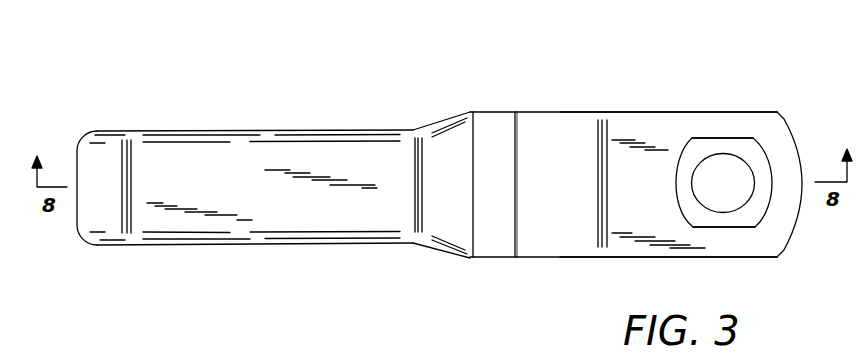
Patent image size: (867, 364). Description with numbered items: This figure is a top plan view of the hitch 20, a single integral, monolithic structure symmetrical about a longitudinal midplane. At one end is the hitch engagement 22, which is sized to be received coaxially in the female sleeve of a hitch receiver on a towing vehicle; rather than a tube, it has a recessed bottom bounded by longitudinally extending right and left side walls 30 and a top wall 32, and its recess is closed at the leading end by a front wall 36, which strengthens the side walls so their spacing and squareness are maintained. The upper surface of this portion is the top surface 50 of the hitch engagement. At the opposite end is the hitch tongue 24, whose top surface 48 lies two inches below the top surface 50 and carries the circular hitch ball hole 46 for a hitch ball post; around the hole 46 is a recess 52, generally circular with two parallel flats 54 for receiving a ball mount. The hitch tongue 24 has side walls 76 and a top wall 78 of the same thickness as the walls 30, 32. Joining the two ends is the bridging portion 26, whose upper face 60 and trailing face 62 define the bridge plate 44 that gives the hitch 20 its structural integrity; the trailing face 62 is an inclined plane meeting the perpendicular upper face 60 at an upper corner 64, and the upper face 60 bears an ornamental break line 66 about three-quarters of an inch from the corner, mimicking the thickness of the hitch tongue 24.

The hitch 20 is at (217, 101).
The hitch engagement 22 is at (300, 128).
The hitch tongue 24 is at (760, 109).
The bridging portion 26 is at (495, 108).
The side walls 30 is at (338, 130).
The top wall 32 is at (283, 207).
The front wall 36 is at (92, 181).
The bridge plate 44 is at (533, 223).
The hitch ball hole 46 is at (723, 176).
The top surface of the hitch tongue 48 is at (665, 128).
The top surface of the hitch engagement 50 is at (150, 180).
The recess 52 is at (756, 211).
The flats 54 is at (752, 138).
The upper face 60 is at (497, 228).
The trailing face 62 is at (565, 217).
The upper corner 64 is at (517, 135).
The break line 66 is at (473, 217).
The side walls 76 is at (660, 112).
The top wall 78 is at (639, 172).